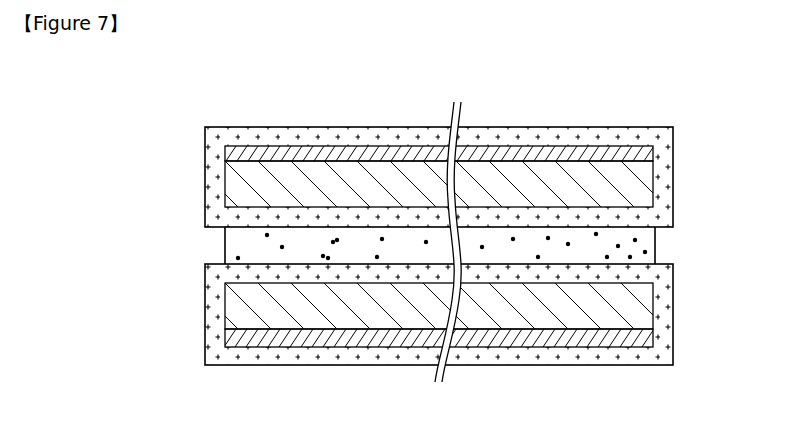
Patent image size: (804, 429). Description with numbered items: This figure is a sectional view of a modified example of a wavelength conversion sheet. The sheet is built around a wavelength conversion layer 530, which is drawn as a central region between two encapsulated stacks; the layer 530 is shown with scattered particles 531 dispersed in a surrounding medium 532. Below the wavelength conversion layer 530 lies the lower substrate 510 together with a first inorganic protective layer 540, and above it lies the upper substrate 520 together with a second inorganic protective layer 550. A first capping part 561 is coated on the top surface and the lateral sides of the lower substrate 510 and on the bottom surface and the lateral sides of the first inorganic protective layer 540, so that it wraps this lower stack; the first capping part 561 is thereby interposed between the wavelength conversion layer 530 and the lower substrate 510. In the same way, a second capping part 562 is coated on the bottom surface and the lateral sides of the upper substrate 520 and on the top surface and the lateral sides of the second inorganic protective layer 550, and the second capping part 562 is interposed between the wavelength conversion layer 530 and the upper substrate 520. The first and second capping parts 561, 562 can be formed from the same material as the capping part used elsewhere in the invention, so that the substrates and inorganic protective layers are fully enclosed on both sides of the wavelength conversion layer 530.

The lower substrate 510 is at (653, 310).
The upper substrate 520 is at (653, 187).
The wavelength conversion layer 530 is at (491, 245).
The particles 531 is at (647, 252).
The medium 532 is at (657, 237).
The first inorganic protective layer 540 is at (653, 343).
The second inorganic protective layer 550 is at (655, 151).
The first capping part 561 is at (636, 358).
The second capping part 562 is at (615, 130).